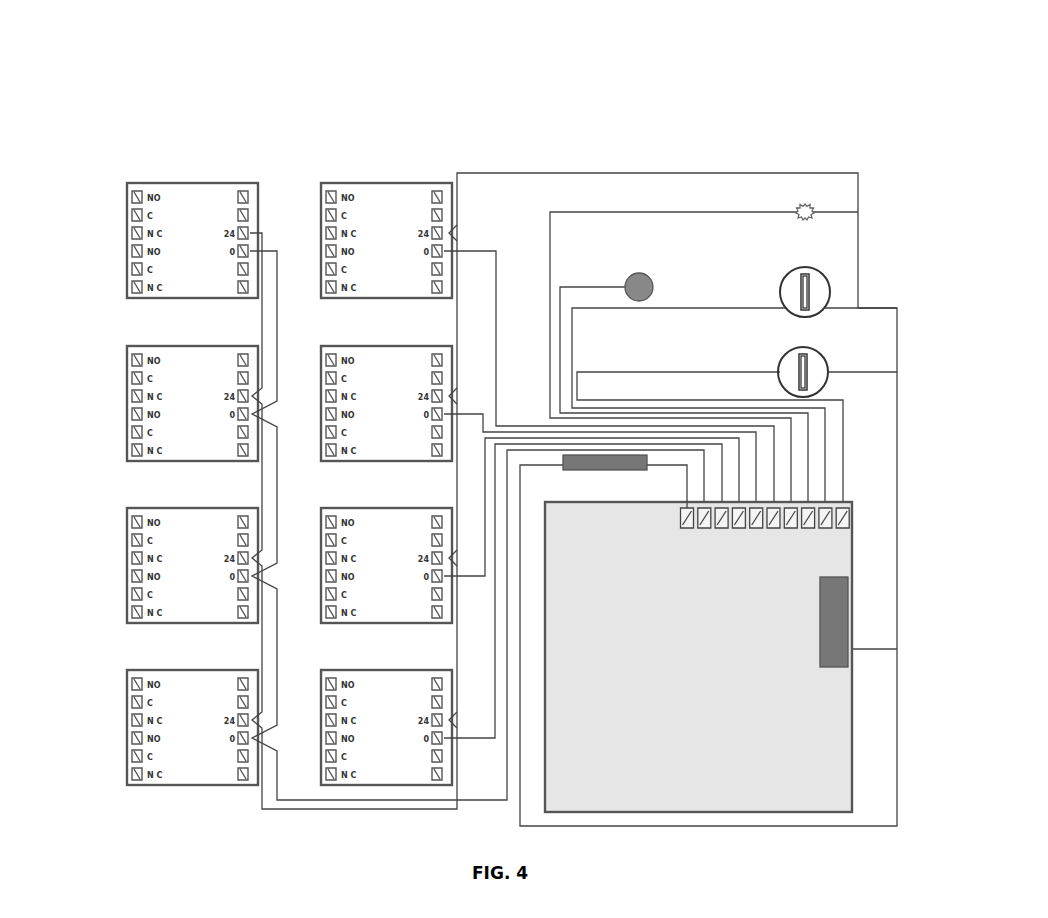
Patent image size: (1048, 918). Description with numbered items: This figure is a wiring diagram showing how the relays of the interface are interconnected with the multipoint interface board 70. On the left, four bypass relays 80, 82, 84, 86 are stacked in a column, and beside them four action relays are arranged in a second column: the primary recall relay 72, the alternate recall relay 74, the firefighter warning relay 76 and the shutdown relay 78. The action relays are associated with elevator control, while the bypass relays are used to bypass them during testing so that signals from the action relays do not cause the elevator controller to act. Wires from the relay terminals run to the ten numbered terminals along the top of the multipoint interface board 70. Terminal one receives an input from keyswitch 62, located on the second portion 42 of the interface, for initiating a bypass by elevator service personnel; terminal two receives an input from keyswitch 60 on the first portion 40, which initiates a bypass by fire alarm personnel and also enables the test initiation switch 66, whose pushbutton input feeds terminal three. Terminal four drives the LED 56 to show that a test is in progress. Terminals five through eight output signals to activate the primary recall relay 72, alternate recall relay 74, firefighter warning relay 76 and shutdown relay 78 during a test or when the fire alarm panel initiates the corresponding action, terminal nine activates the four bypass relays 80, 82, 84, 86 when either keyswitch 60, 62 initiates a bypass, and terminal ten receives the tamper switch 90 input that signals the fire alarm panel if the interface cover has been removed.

The first portion 40 is at (199, 84).
The second portion 42 is at (840, 100).
The testing in progress indicator 56 is at (813, 212).
The keyswitch 60 is at (815, 292).
The keyswitch 62 is at (820, 372).
The test initiation switch 66 is at (639, 285).
The multipoint interface board 70 is at (755, 760).
The primary recall relay 72 is at (370, 228).
The alternate recall relay 74 is at (370, 398).
The firefighter warning relay 76 is at (370, 558).
The shutdown relay 78 is at (370, 722).
The bypass relay 80 is at (172, 248).
The bypass relay 82 is at (193, 406).
The bypass relay 84 is at (172, 557).
The bypass relay 86 is at (172, 731).
The tamper switch 90 is at (598, 466).